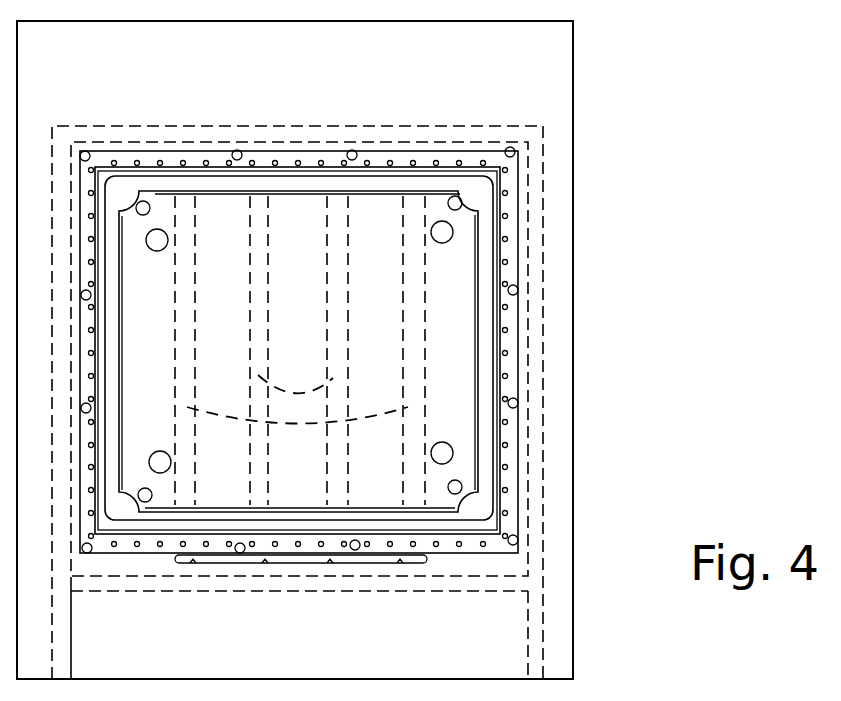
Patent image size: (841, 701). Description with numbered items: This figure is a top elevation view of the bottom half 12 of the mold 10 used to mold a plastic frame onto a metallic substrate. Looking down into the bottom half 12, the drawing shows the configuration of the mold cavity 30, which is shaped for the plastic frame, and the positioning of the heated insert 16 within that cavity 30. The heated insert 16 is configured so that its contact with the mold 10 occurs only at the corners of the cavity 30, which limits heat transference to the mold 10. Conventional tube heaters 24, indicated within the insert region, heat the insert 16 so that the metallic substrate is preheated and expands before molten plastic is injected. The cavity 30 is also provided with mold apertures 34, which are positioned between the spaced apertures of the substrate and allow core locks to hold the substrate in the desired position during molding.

The mold 10 is at (376, 350).
The bottom half 12 is at (518, 90).
The heated insert 16 is at (313, 340).
The tube heaters 24 is at (297, 402).
The cavity 30 is at (391, 350).
The mold apertures 34 is at (508, 371).